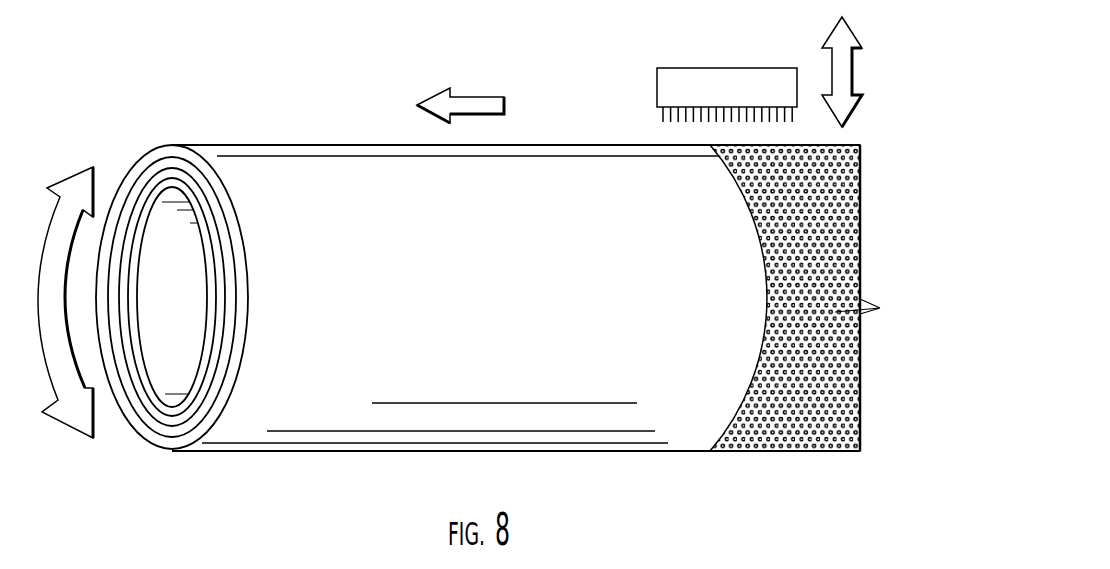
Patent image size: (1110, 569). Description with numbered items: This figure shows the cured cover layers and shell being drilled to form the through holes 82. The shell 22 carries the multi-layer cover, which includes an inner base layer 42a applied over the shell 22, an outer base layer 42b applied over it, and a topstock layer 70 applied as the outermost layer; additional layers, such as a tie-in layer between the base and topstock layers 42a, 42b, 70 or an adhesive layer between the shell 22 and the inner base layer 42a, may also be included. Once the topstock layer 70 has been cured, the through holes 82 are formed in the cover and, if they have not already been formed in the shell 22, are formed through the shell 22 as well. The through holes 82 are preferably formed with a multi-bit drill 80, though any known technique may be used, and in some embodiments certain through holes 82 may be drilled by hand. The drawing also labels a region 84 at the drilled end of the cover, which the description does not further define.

The shell 22 is at (160, 404).
The inner base layer 42a is at (165, 418).
The outer base layer 42b is at (175, 428).
The topstock layer 70 is at (571, 168).
The multi-bit drill 80 is at (737, 82).
The through holes 82 is at (807, 210).
The roughened region 84 is at (823, 282).